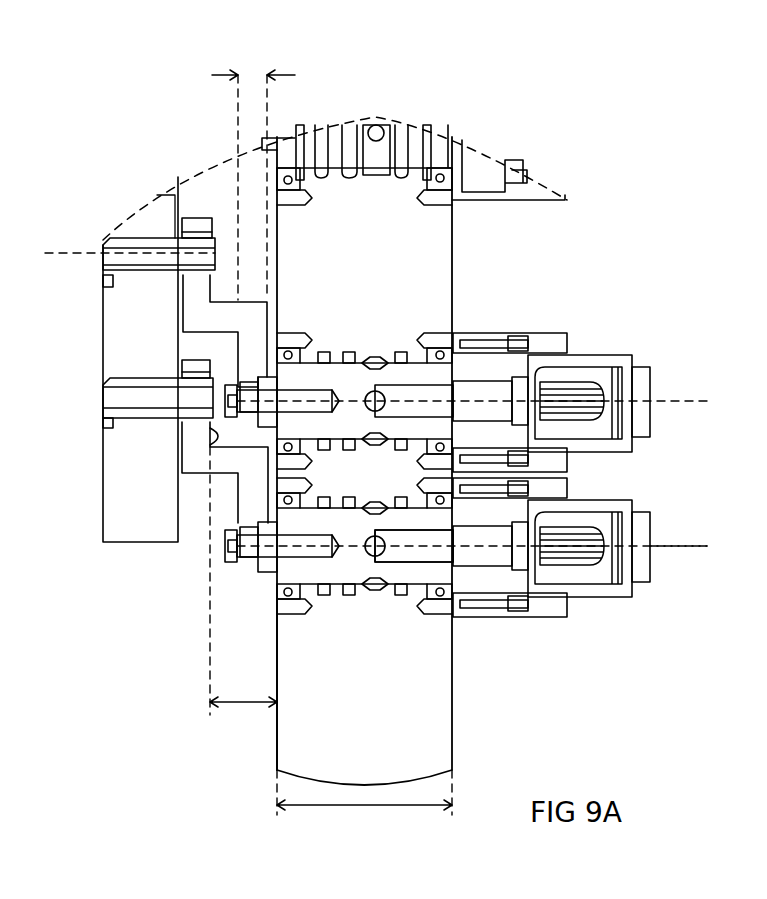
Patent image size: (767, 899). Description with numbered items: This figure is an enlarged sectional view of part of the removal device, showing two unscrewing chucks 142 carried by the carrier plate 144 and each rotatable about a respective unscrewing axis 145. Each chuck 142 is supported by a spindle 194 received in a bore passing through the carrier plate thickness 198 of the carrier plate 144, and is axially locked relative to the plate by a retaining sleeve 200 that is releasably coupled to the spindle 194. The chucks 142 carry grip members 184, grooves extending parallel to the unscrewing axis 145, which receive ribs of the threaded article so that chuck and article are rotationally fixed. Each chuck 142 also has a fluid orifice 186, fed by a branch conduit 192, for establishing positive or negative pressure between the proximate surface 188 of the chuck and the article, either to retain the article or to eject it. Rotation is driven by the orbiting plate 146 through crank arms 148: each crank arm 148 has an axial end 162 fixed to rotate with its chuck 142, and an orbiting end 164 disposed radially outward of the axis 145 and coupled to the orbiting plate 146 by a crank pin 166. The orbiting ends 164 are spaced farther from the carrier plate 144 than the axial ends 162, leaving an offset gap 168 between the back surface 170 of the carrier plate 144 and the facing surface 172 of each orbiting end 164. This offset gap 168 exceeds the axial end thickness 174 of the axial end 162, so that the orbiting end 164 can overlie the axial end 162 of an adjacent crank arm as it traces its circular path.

The unscrewing chuck 142 is at (610, 360).
The carrier plate 144 is at (435, 735).
The unscrewing axis 145 is at (688, 548).
The orbiting plate 146 is at (133, 540).
The crank arm 148 is at (228, 329).
The axial end 162 is at (268, 376).
The orbiting end 164 is at (194, 220).
The crank pin 166 is at (108, 283).
The offset gap 168 is at (238, 705).
The back surface 170 is at (283, 722).
The facing surface 172 is at (205, 437).
The axial end thickness 174 is at (290, 76).
The grip member 184 is at (600, 558).
The fluid orifice 186 is at (516, 550).
The proximate surface 188 is at (542, 560).
The branch conduit 192 is at (418, 553).
The spindle 194 is at (340, 565).
The carrier plate thickness 198 is at (382, 808).
The retaining sleeve 200 is at (525, 333).